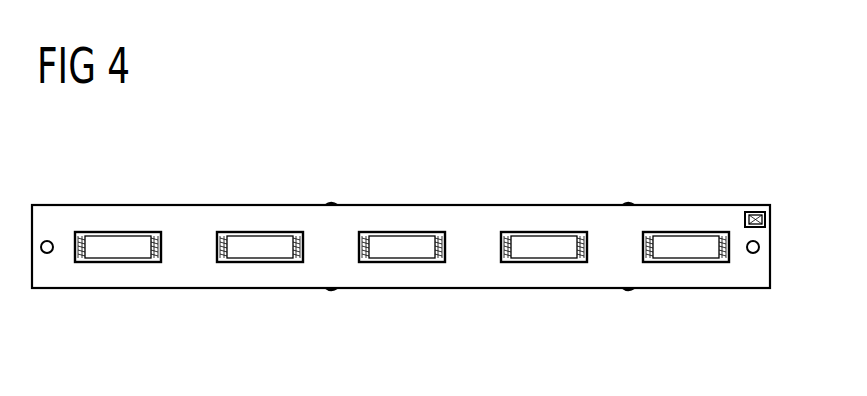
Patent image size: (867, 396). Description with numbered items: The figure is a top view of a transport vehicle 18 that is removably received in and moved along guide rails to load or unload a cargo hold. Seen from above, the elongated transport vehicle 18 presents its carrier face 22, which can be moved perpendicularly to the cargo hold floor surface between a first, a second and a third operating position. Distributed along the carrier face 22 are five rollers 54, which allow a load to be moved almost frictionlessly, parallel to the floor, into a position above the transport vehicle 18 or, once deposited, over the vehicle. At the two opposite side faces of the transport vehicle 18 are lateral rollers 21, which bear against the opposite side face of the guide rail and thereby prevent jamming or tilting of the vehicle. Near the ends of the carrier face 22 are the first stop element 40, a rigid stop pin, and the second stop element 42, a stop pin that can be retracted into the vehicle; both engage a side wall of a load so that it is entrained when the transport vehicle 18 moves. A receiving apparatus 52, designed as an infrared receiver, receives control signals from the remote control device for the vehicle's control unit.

The transport vehicle 18 is at (668, 140).
The lateral rollers 21 is at (330, 203).
The carrier face 22 is at (194, 216).
The first stop element 40 is at (755, 253).
The second stop element 42 is at (48, 241).
The receiving apparatus 52 is at (752, 214).
The rollers 54 is at (118, 250).